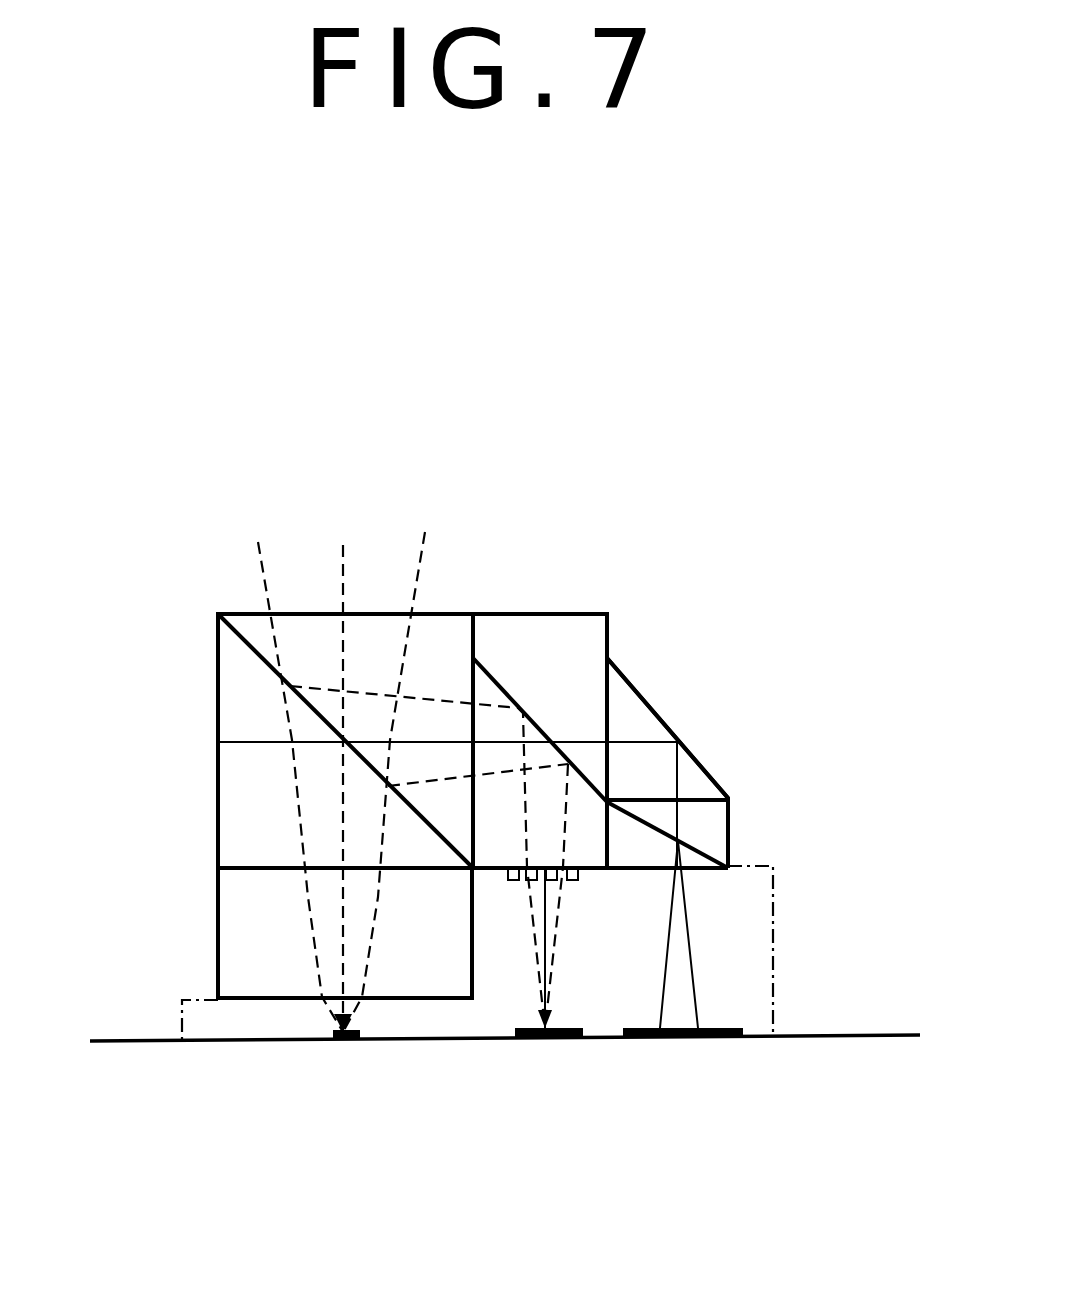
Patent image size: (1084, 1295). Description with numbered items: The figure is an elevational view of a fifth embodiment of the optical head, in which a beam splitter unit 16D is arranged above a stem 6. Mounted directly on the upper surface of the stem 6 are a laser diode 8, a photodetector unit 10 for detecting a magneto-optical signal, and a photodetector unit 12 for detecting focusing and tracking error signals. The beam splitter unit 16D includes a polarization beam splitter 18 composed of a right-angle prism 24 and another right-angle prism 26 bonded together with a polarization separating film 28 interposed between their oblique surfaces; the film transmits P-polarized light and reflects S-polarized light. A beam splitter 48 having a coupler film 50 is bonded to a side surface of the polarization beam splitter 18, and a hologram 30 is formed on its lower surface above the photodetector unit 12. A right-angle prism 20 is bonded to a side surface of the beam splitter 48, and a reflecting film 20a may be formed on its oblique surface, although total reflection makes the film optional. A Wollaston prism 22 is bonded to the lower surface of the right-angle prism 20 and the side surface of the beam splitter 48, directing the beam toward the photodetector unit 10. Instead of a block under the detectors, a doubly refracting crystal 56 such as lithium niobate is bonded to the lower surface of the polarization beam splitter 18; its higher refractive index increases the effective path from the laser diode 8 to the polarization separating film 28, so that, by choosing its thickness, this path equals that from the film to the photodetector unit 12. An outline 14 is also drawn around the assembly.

The stem 6 is at (860, 1033).
The laser diode 8 is at (343, 1042).
The photodetector unit 10 is at (680, 1040).
The photodetector unit 12 is at (545, 1040).
The base / housing 14 is at (775, 927).
The beam splitter unit 16D is at (607, 612).
The polarization beam splitter 18 is at (383, 612).
The right-angle prism 20 is at (630, 702).
The reflecting film 20a is at (700, 760).
The Wollaston prism 22 is at (732, 825).
The right-angle prism 24 is at (245, 748).
The right-angle prism 26 is at (307, 627).
The polarization separating film 28 is at (260, 660).
The hologram 30 is at (578, 872).
The beam splitter 48 is at (508, 612).
The coupler film 50 is at (508, 690).
The doubly refracting crystal 56 is at (238, 932).